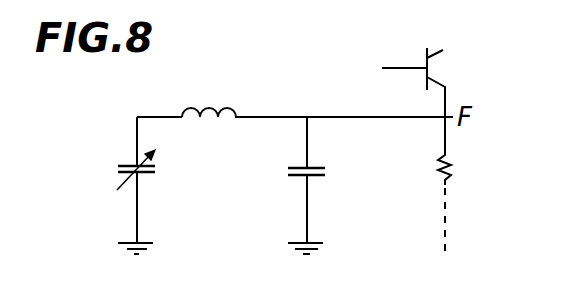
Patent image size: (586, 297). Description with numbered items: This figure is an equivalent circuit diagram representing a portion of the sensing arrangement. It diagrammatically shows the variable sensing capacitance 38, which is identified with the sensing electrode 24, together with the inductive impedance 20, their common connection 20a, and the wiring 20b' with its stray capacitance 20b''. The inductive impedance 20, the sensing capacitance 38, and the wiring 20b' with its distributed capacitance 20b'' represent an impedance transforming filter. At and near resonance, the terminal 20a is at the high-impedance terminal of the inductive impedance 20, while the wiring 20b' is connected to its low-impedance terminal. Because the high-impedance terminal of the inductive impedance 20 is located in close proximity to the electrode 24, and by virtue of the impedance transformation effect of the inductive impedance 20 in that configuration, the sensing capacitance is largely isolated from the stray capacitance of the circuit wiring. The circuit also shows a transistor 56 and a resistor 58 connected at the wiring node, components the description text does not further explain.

The common connection 20a is at (133, 117).
The inductive impedance 20 is at (218, 84).
The sensing electrode 24 is at (125, 163).
The variable sensing capacitance 38 is at (112, 172).
The stray capacitance 20b'' is at (271, 185).
The wiring 20b' is at (342, 93).
The transistor 56 is at (443, 64).
The resistor 58 is at (450, 167).